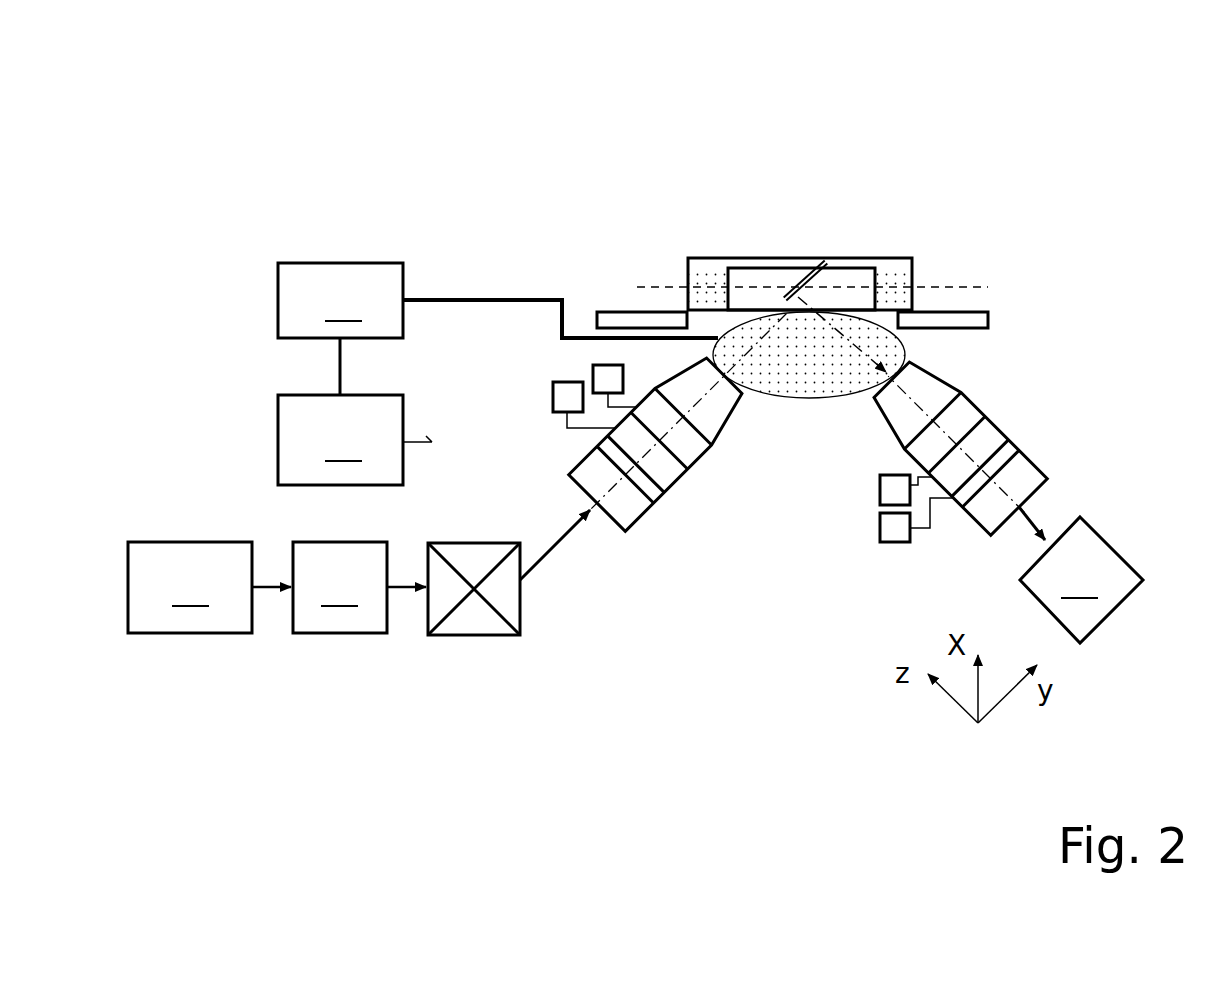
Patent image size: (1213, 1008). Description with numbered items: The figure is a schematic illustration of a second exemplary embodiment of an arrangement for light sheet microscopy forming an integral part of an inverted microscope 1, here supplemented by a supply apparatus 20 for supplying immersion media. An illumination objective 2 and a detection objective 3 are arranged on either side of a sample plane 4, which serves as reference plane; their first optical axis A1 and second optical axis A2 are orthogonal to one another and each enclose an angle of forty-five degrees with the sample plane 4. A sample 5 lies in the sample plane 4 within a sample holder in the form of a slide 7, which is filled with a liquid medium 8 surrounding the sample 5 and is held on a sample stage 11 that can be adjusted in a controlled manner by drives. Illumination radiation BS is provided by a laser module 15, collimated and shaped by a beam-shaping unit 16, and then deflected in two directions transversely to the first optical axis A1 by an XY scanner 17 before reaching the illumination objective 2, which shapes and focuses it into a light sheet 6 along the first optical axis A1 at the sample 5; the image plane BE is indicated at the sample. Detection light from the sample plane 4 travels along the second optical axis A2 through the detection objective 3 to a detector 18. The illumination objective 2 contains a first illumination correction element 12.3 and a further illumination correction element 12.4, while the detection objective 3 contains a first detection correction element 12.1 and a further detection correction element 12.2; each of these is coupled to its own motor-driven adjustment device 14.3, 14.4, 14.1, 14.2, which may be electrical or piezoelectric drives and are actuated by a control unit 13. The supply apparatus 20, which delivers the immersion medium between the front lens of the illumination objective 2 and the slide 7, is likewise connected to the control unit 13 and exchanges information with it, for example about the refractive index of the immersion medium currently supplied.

The microscope 1 is at (668, 88).
The illumination objective 2 is at (662, 451).
The detection objective 3 is at (1036, 444).
The sample plane 4 is at (945, 288).
The sample 5 is at (852, 260).
The light sheet 6 is at (800, 273).
The slide 7 is at (687, 278).
The medium 8 is at (695, 258).
The sample stage 11 is at (990, 312).
The first detection correction element 12.1 is at (980, 468).
The further detection correction element 12.2 is at (990, 478).
The first illumination correction element 12.3 is at (625, 474).
The further illumination correction element 12.4 is at (636, 464).
The control unit 13 is at (355, 411).
The first adjustment device for detection correction element 14.1 is at (872, 490).
The further adjustment device for detection correction element 14.2 is at (910, 533).
The first adjustment device for illumination correction element 14.3 is at (553, 385).
The further adjustment device for illumination correction element 14.4 is at (593, 376).
The laser module 15 is at (209, 587).
The beam-shaping unit 16 is at (359, 587).
The XY scanner 17 is at (473, 637).
The detector 18 is at (1081, 580).
The supply apparatus 20 is at (498, 300).
The illumination radiation BS is at (565, 535).
The image plane BE is at (810, 265).
The first optical axis A1 is at (590, 452).
The second optical axis A2 is at (1037, 467).